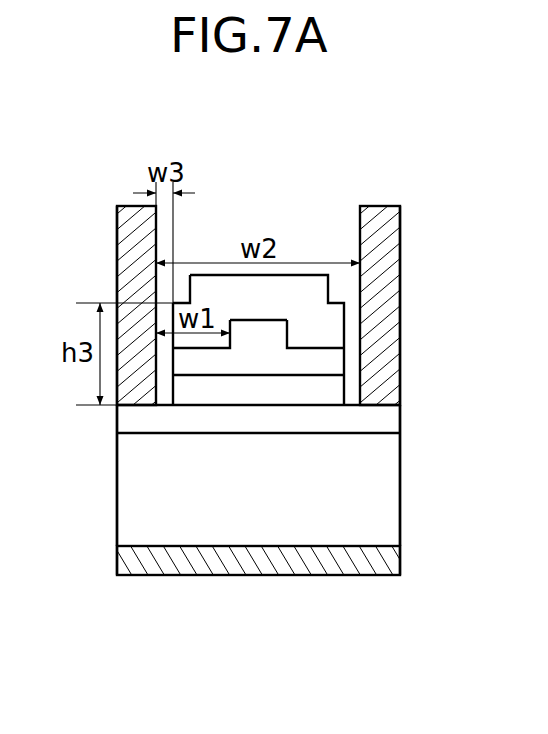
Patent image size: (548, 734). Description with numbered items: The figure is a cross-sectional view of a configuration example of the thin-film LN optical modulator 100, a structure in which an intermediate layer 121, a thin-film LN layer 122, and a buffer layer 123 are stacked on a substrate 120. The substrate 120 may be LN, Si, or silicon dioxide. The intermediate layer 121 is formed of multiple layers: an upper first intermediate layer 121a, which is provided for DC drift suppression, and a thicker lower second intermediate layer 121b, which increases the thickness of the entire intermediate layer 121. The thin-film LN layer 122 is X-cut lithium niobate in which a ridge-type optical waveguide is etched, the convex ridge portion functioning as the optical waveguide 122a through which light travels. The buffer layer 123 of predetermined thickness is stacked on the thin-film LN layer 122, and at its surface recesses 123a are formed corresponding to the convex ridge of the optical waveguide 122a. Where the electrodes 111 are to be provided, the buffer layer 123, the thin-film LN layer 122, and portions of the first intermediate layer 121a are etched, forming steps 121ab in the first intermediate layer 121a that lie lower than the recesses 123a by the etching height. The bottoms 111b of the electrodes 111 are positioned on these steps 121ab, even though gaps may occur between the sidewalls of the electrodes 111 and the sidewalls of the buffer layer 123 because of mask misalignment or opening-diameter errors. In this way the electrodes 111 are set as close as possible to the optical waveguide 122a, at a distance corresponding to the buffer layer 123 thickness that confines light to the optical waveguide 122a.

The thin-film LN optical modulator 100 is at (388, 150).
The electrodes 111 is at (119, 243).
The bottoms of the electrodes 111b is at (138, 403).
The substrate 120 is at (400, 553).
The intermediate layer 121 is at (350, 620).
The first intermediate layer 121a is at (225, 418).
The second intermediate layer 121b is at (312, 497).
The steps of the first intermediate layer 121ab is at (208, 458).
The thin-film LN layer 122 is at (328, 360).
The optical waveguide 122a is at (270, 332).
The buffer layer 123 is at (328, 322).
The recesses 123a is at (181, 302).